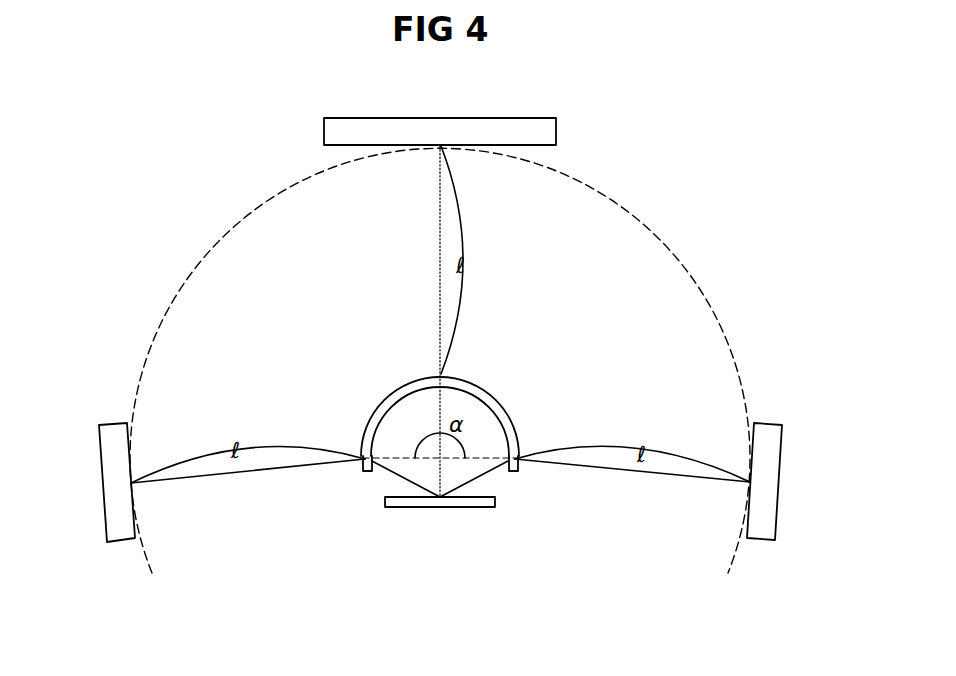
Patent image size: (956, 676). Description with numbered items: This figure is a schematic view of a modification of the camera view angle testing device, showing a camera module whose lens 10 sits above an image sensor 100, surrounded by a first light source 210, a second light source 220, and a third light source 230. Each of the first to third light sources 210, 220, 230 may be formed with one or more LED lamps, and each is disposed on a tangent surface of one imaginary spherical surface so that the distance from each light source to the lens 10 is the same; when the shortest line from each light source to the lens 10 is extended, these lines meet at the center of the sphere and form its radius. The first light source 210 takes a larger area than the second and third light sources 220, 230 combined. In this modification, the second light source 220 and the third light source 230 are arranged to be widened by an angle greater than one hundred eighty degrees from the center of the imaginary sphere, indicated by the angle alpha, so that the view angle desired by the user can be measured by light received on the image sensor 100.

The lens 10 is at (480, 389).
The image sensor 100 is at (496, 500).
The first light source 210 is at (548, 119).
The second light source 220 is at (111, 428).
The third light source 230 is at (782, 432).